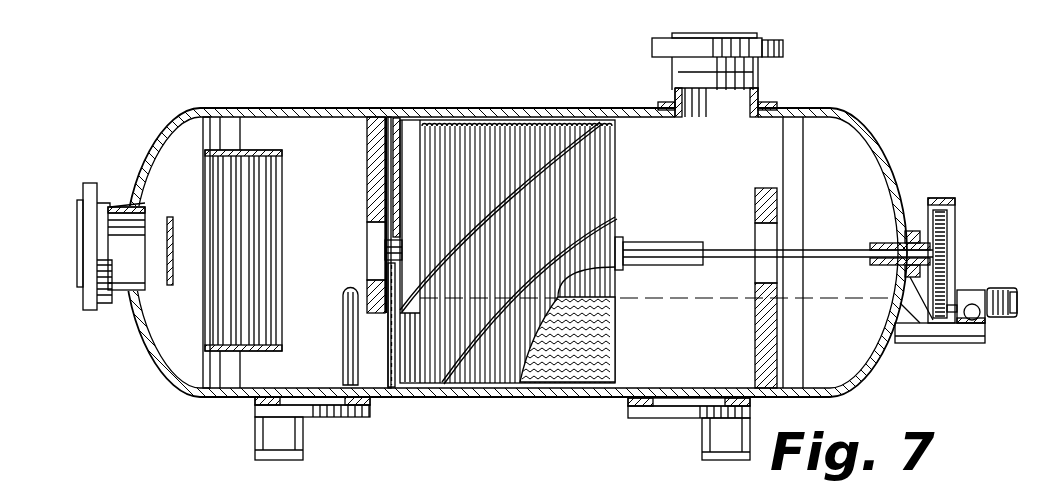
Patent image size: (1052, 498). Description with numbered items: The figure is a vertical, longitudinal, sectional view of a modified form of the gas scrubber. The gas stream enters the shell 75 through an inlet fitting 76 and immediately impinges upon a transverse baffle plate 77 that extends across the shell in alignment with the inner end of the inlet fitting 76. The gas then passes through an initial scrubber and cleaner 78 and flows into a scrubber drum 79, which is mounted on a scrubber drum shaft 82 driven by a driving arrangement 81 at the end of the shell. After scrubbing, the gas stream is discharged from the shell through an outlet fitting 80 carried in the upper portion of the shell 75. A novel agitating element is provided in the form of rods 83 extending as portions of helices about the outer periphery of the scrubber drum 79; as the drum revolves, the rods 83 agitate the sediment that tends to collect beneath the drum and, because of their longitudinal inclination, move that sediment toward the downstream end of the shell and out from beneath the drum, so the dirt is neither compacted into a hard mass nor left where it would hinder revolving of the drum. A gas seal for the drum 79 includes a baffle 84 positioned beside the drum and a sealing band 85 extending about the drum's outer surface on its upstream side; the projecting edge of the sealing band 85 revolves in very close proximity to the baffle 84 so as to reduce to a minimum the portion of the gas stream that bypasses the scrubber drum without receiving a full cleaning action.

The shell 75 is at (590, 390).
The inlet fitting 76 is at (123, 292).
The transverse baffle plate 77 is at (175, 233).
The initial scrubber and cleaner 78 is at (262, 187).
The scrubber drum 79 is at (588, 158).
The outlet fitting 80 is at (737, 98).
The driving arrangement 81 is at (972, 303).
The scrubber drum shaft 82 is at (683, 250).
The rods 83 is at (582, 123).
The baffle 84 is at (388, 118).
The sealing band 85 is at (438, 122).